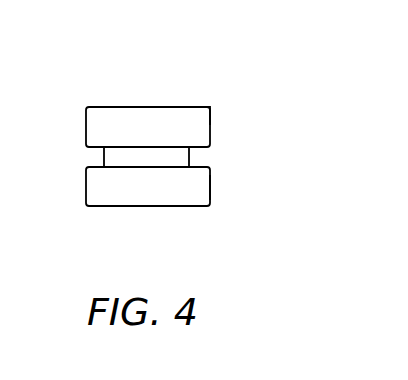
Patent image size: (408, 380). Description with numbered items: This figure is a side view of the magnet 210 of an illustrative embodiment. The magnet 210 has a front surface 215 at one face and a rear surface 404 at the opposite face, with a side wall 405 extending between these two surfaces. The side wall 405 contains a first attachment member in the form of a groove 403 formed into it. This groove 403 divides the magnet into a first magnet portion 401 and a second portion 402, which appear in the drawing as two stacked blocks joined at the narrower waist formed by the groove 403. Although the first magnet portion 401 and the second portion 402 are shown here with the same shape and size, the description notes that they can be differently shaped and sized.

The magnet 210 is at (208, 107).
The front surface 215 is at (146, 206).
The first magnet portion 401 is at (94, 192).
The second portion 402 is at (96, 130).
The groove 403 is at (104, 158).
The rear surface 404 is at (139, 107).
The side wall 405 is at (210, 190).